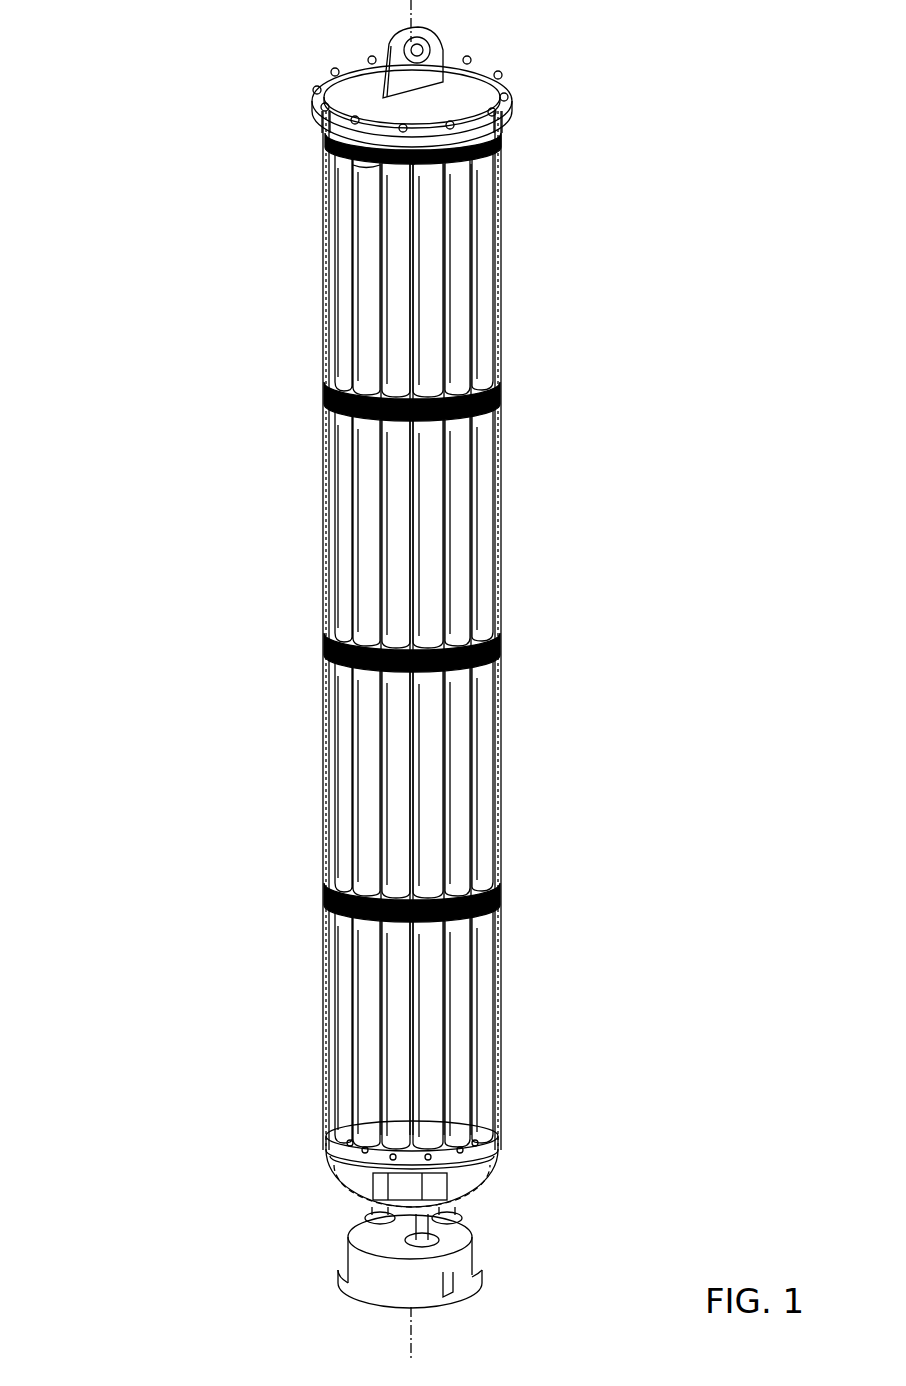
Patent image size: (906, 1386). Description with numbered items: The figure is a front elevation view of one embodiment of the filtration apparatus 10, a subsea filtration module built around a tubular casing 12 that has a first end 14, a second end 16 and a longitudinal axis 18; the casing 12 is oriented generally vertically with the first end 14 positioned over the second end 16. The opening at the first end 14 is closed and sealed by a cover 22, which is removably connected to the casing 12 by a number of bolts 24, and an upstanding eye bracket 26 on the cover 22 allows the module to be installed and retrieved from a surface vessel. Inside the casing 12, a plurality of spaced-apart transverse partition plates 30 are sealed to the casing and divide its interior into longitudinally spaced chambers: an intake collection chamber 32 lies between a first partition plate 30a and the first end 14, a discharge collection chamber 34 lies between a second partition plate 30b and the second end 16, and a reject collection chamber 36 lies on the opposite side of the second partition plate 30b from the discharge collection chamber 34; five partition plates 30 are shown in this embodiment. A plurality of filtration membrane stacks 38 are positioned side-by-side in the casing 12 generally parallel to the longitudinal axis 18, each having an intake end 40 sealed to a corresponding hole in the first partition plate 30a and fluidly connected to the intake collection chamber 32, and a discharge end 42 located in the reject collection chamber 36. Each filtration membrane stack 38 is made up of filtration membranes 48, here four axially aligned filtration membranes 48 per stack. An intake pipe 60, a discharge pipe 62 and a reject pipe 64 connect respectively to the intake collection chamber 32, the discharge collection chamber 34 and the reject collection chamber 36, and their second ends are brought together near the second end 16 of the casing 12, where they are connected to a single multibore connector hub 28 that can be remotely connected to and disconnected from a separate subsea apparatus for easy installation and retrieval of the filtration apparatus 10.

The filtration apparatus 10 is at (118, 106).
The tubular casing 12 is at (316, 561).
The first end 14 is at (315, 118).
The second end 16 is at (347, 1192).
The longitudinal axis 18 is at (408, 13).
The cover 22 is at (473, 75).
The bolts 24 is at (508, 94).
The upstanding eye bracket 26 is at (432, 34).
The multibore connector hub 28 is at (347, 1258).
The transverse partition plates 30 is at (332, 395).
The first partition plate 30a is at (323, 151).
The second partition plate 30b is at (337, 1145).
The intake collection chamber 32 is at (358, 166).
The discharge collection chamber 34 is at (477, 1179).
The reject collection chamber 36 is at (352, 1153).
The filtration membrane stacks 38 is at (486, 368).
The intake end 40 is at (480, 167).
The discharge end 42 is at (452, 1138).
The filtration membranes 48 is at (425, 380).
The intake pipe 60 is at (452, 1209).
The discharge pipe 62 is at (440, 1230).
The reject pipe 64 is at (373, 1209).